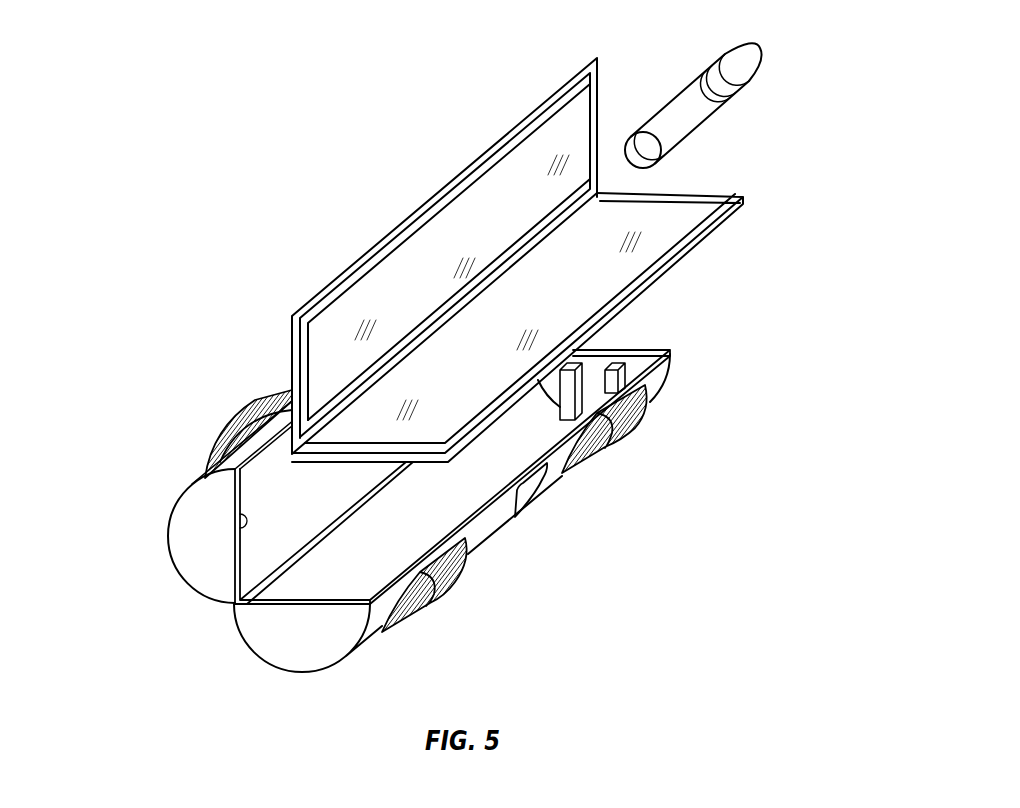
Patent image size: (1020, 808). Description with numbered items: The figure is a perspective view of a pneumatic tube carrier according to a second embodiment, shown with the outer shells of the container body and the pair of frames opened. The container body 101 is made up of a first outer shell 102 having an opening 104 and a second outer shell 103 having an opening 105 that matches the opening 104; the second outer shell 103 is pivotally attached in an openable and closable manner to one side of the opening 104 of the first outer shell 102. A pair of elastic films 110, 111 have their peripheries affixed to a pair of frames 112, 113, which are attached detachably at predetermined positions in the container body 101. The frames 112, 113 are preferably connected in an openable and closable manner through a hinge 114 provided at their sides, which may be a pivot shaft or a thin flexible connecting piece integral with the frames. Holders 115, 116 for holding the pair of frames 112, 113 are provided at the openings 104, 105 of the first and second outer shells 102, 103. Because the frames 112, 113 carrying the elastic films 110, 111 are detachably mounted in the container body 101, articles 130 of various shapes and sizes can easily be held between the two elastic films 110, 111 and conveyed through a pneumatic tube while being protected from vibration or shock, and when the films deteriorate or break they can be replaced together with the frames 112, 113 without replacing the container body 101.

The container body 101 is at (209, 442).
The first outer shell 102 is at (452, 531).
The second outer shell 103 is at (163, 536).
The opening 104 is at (452, 477).
The opening 105 is at (169, 504).
The elastic film 110 is at (638, 291).
The elastic film 111 is at (486, 256).
The frame 112 is at (560, 327).
The frame 113 is at (462, 269).
The hinge 114 is at (426, 341).
The holder 115 is at (662, 358).
The holder 116 is at (632, 357).
The article 130 is at (732, 105).